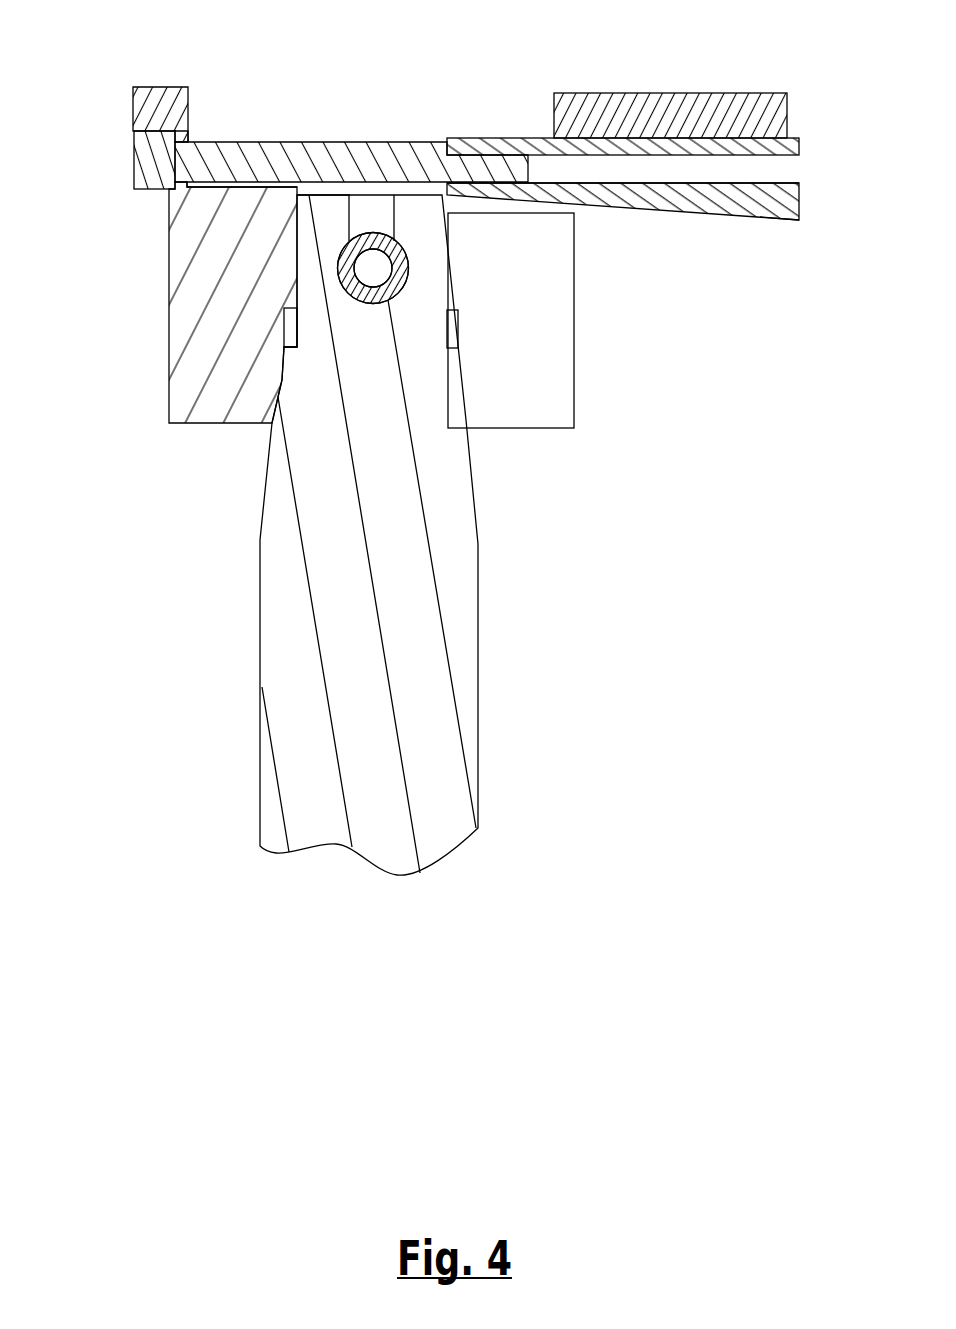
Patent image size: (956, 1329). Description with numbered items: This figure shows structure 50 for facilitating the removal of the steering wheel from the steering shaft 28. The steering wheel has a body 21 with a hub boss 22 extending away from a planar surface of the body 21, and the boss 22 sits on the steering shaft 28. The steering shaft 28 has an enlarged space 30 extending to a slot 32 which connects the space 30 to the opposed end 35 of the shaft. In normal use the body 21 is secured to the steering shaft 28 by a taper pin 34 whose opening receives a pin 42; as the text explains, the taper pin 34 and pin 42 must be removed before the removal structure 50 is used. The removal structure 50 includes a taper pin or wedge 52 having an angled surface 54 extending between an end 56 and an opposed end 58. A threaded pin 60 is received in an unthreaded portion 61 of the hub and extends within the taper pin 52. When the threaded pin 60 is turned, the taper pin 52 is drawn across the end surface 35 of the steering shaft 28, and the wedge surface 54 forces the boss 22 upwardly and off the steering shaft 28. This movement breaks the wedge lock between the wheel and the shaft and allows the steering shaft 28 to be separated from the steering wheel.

The body 21 is at (160, 87).
The hub boss 22 is at (186, 402).
The steering shaft 28 is at (458, 587).
The enlarged space 30 is at (375, 304).
The slot 32 is at (383, 215).
The taper pin 34 is at (338, 276).
The opposed end 35 is at (320, 194).
The pin 42 is at (383, 273).
The structure 50 is at (774, 264).
The taper pin or wedge 52 is at (800, 203).
The angled surface 54 is at (780, 220).
The end 56 is at (793, 171).
The opposed end 58 is at (488, 137).
The threaded pin 60 is at (134, 172).
The portion of the hub 61 is at (186, 124).